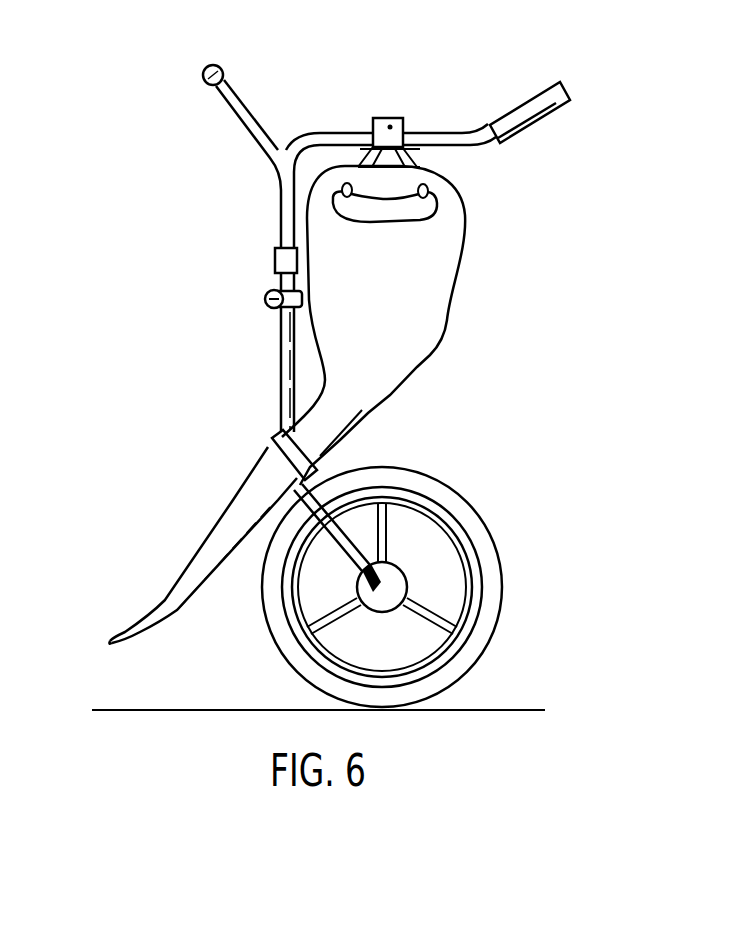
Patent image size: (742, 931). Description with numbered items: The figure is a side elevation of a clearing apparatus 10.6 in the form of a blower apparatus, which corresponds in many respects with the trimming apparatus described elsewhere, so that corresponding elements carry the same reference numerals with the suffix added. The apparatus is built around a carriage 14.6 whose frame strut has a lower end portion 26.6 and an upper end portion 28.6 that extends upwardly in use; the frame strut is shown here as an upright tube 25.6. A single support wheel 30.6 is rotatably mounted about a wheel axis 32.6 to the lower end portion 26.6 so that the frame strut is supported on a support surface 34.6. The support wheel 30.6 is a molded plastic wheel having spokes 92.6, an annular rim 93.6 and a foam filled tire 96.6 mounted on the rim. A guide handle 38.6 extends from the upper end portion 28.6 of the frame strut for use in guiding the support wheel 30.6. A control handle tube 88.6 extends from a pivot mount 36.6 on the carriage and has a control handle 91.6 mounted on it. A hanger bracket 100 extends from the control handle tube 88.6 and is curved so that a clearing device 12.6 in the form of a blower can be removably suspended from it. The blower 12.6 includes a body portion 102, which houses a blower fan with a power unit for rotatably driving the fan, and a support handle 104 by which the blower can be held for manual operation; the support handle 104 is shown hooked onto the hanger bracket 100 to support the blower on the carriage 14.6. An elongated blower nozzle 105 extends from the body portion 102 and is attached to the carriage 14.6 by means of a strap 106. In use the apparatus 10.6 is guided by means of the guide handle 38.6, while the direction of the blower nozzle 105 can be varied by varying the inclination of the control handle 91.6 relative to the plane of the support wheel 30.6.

The clearing apparatus 10.6 is at (122, 171).
The clearing device 12.6 is at (496, 296).
The carriage 14.6 is at (229, 403).
The upright stem tube 25.6 is at (280, 338).
The lower end portion 26.6 is at (345, 527).
The upper end portion 28.6 is at (250, 106).
The support wheel 30.6 is at (515, 645).
The wheel axis 32.6 is at (408, 586).
The support surface 34.6 is at (200, 710).
The pivot mount 36.6 is at (256, 261).
The guide handle 38.6 is at (230, 72).
The control handle tube 88.6 is at (374, 117).
The control handle 91.6 is at (568, 95).
The spokes 92.6 is at (383, 530).
The annular rim 93.6 is at (473, 580).
The tire 96.6 is at (483, 553).
The hanger bracket 100 is at (405, 130).
The body portion 102 is at (395, 347).
The support handle 104 is at (447, 207).
The blower nozzle 105 is at (243, 500).
The strap 106 is at (303, 457).